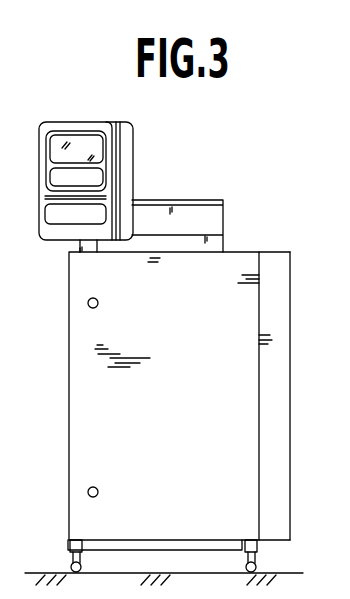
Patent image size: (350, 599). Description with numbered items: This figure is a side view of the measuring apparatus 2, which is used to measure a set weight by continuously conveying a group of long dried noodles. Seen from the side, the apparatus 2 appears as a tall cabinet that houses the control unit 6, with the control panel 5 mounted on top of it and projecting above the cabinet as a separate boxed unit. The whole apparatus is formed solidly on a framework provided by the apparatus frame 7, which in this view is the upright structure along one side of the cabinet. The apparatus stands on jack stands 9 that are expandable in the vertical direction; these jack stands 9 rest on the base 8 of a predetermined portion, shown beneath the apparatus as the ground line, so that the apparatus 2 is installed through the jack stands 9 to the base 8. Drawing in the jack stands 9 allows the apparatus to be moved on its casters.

The measuring apparatus 2 is at (207, 163).
The control panel 5 is at (140, 143).
The control unit 6 is at (80, 388).
The apparatus frame 7 is at (278, 267).
The base 8 is at (280, 577).
The jack stand 9 is at (72, 557).